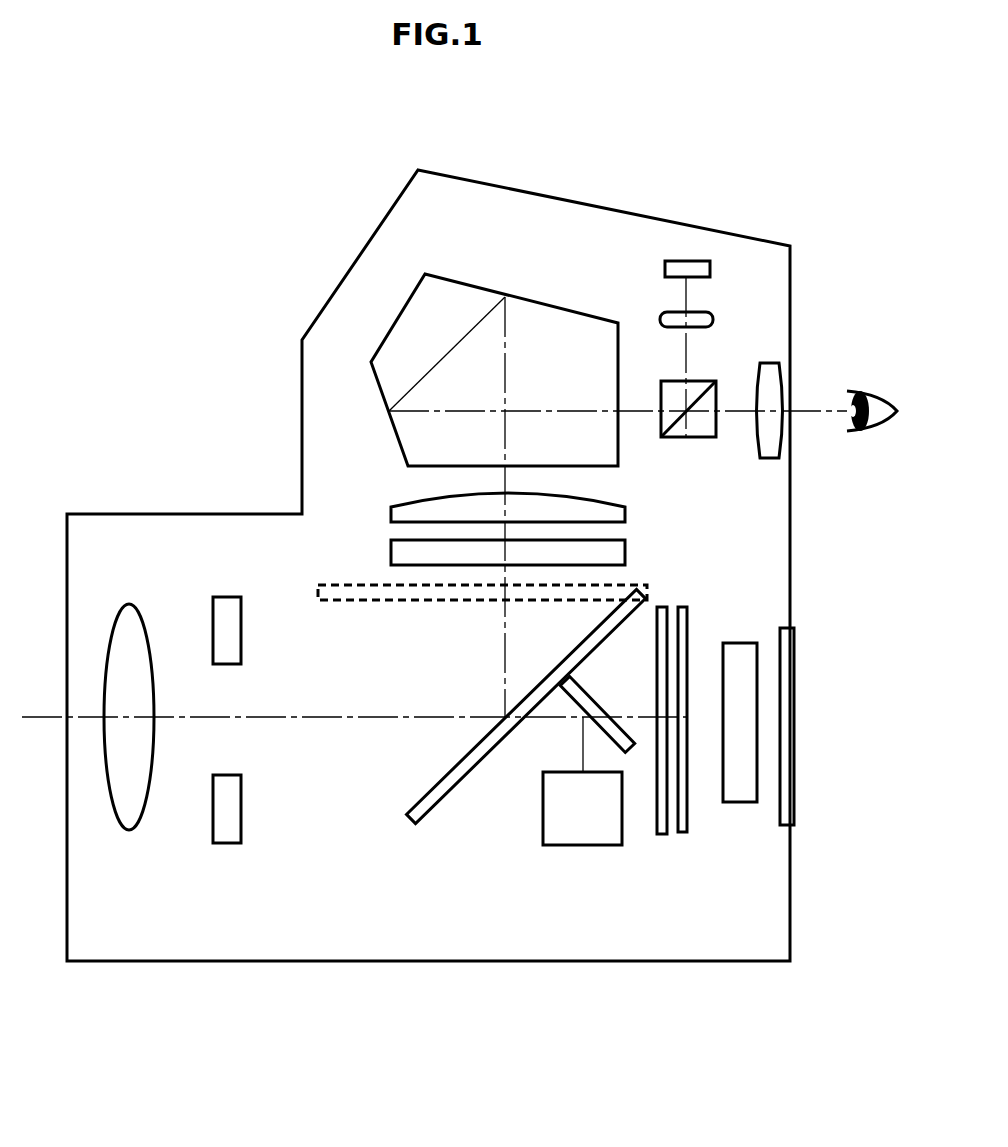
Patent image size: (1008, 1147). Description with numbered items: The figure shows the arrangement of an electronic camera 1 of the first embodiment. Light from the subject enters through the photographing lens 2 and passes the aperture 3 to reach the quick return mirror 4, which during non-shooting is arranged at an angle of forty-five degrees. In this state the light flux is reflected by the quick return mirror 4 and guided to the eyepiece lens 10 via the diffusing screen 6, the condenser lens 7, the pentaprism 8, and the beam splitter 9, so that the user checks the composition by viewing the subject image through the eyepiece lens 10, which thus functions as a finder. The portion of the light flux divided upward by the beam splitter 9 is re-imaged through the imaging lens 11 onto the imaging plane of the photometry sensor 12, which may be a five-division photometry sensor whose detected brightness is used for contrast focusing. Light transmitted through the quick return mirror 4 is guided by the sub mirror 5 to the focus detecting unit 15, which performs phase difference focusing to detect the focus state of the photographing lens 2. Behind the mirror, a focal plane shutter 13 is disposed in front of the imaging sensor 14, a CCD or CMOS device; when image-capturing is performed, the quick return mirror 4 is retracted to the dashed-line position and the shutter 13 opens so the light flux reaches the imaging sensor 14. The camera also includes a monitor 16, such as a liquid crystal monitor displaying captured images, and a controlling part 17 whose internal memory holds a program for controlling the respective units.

The electronic camera 1 is at (290, 370).
The photographing lens 2 is at (140, 604).
The aperture 3 is at (226, 598).
The quick return mirror 4 is at (405, 813).
The sub mirror 5 is at (606, 716).
The diffusing screen 6 is at (391, 552).
The condenser lens 7 is at (391, 512).
The pentaprism 8 is at (448, 279).
The beam splitter 9 is at (661, 400).
The eyepiece lens 10 is at (770, 459).
The imaging lens 11 is at (713, 320).
The photometry sensor 12 is at (665, 270).
The shutter 13 is at (661, 607).
The imaging sensor 14 is at (684, 607).
The focus detecting unit 15 is at (543, 802).
The monitor 16 is at (794, 645).
The controlling part 17 is at (736, 802).